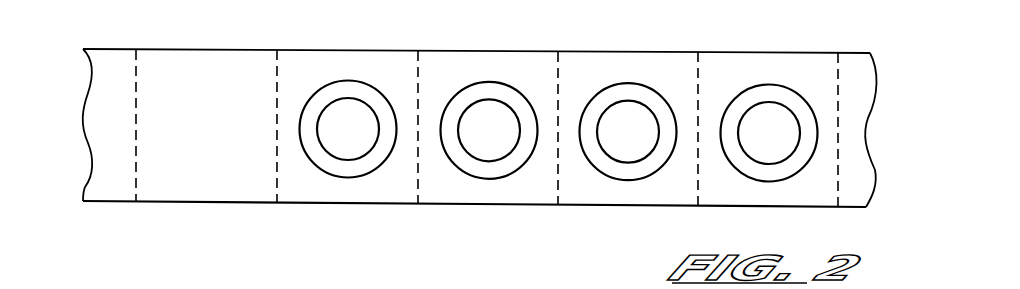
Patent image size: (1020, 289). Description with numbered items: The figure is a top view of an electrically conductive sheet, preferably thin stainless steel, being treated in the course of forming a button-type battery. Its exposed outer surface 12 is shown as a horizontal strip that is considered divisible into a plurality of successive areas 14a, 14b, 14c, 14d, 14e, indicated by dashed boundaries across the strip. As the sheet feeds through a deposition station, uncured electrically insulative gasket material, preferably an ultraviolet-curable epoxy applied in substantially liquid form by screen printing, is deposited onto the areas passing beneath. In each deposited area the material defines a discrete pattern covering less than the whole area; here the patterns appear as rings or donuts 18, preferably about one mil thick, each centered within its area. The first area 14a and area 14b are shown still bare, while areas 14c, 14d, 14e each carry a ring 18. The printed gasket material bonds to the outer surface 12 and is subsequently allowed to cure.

The outer surface 12 is at (118, 65).
The area 14a is at (100, 187).
The area 14b is at (203, 188).
The area 14c is at (311, 190).
The area 14d is at (442, 191).
The area 14e is at (582, 194).
The ring 18 is at (373, 80).